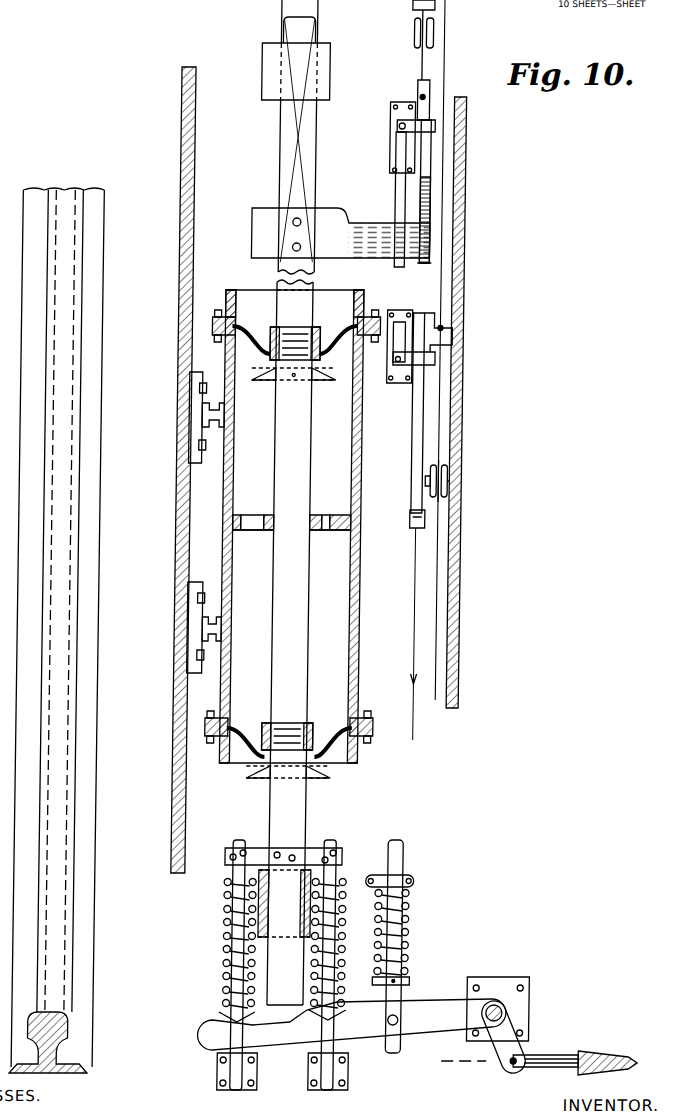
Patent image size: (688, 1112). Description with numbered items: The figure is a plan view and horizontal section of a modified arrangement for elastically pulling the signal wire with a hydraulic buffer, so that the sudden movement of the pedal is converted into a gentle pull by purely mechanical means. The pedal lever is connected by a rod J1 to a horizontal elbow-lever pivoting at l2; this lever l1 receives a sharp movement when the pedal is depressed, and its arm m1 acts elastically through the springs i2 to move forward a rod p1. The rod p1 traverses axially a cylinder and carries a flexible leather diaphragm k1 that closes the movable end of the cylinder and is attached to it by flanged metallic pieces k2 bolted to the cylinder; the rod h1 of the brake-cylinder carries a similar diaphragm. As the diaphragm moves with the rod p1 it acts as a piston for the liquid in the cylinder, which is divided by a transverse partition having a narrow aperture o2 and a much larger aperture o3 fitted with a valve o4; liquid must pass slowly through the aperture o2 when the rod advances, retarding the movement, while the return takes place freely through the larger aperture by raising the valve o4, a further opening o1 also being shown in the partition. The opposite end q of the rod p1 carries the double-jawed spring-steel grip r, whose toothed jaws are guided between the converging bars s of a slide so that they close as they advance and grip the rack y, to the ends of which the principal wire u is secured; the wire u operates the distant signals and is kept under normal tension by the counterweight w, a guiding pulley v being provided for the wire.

The counterweight w is at (413, 40).
The end of rod q is at (303, 148).
The double-jawed spring-steel grip r is at (365, 224).
The slide bars s is at (397, 187).
The rack y is at (426, 210).
The principal wire u is at (440, 323).
The pulley v is at (447, 472).
The brake-cylinder rod h1 is at (362, 646).
The flanged metallic pieces k2 is at (223, 291).
The flexible diaphragm k1 is at (234, 312).
The port o1 is at (326, 515).
The narrow aperture o2 is at (326, 531).
The larger aperture o3 is at (253, 515).
The valve o4 is at (268, 545).
The rod p1 is at (310, 817).
The springs i2 is at (226, 948).
The lever arm m1 is at (303, 1036).
The pivot of elbow-lever l2 is at (530, 1006).
The lever l1 is at (518, 1033).
The rod J1 is at (570, 1053).